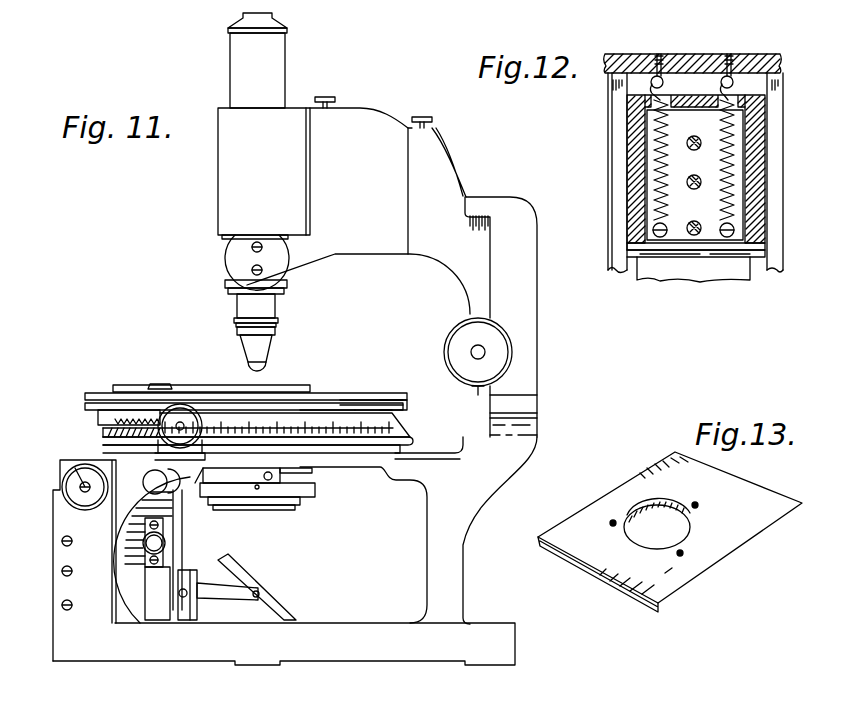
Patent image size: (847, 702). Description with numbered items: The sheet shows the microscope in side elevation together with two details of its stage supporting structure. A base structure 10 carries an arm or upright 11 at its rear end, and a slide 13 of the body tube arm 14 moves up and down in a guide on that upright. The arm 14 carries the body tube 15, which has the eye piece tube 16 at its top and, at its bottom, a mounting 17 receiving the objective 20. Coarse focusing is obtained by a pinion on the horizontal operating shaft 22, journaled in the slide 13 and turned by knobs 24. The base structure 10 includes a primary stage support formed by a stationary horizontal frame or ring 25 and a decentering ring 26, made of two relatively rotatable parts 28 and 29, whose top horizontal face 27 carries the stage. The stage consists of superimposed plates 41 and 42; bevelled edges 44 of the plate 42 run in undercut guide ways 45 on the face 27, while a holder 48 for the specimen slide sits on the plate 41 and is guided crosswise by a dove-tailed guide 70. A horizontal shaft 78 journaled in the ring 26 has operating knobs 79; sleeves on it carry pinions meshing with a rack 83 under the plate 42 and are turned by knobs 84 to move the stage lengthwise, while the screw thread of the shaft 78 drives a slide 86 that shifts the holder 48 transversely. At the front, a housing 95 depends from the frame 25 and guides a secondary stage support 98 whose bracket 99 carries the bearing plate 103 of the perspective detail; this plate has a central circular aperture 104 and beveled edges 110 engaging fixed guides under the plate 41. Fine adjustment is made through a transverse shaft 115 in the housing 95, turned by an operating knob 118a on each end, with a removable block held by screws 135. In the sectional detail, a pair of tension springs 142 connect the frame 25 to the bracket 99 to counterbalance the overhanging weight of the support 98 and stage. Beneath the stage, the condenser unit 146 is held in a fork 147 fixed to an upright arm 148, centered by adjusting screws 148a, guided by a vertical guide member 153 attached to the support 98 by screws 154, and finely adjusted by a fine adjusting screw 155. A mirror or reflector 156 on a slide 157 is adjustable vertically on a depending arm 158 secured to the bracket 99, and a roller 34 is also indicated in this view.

In FIG. 11, the base structure 10 is at (284, 626).
In FIG. 12, the base structure 10 is at (680, 173).
In FIG. 11, the arm or upright 11 is at (531, 320).
In FIG. 11, the slide of the body tube arm 13 is at (463, 292).
In FIG. 11, the body tube arm 14 is at (423, 272).
In FIG. 11, the body tube 15 is at (276, 168).
In FIG. 11, the eye piece tube 16 is at (278, 54).
In FIG. 11, the mounting 17 is at (276, 325).
In FIG. 11, the objective 20 is at (262, 370).
In FIG. 11, the operating shaft 22 is at (485, 351).
In FIG. 11, the knobs 24 is at (500, 371).
In FIG. 11, the horizontal frame or ring 25 is at (283, 452).
In FIG. 12, the horizontal frame or ring 25 is at (748, 56).
In FIG. 11, the decentering ring 26 is at (412, 421).
In FIG. 11, the top horizontal face 27 is at (370, 415).
In FIG. 11, the part of decentering ring 28 is at (256, 424).
In FIG. 11, the part of decentering ring 29 is at (412, 446).
In FIG. 11, the roller 34 is at (158, 470).
In FIG. 11, the stage plate 41 is at (379, 393).
In FIG. 11, the stage plate 42 is at (404, 398).
In FIG. 11, the bevelled edges 44 is at (365, 400).
In FIG. 11, the undercut guide ways 45 is at (320, 410).
In FIG. 11, the holder 48 is at (190, 384).
In FIG. 11, the dove-tailed guide 70 is at (152, 384).
In FIG. 11, the horizontal shaft 78 is at (182, 424).
In FIG. 11, the operating knobs 79 is at (202, 424).
In FIG. 11, the rack 83 is at (98, 417).
In FIG. 11, the operating knobs 84 is at (190, 448).
In FIG. 11, the slide 86 is at (105, 430).
In FIG. 11, the projection or housing 95 is at (66, 516).
In FIG. 12, the secondary stage support 98 is at (722, 283).
In FIG. 12, the bracket 99 is at (628, 153).
In FIG. 13, the bearing plate 103 is at (670, 527).
In FIG. 13, the central circular aperture 104 is at (638, 508).
In FIG. 13, the beveled edges 110 is at (658, 612).
In FIG. 11, the transverse shaft 115 is at (62, 471).
In FIG. 11, the operating knob 118a is at (98, 516).
In FIG. 11, the screws 135 is at (63, 603).
In FIG. 12, the tension springs 142 is at (722, 214).
In FIG. 11, the condenser unit 146 is at (290, 500).
In FIG. 11, the fork 147 is at (253, 476).
In FIG. 11, the upright arm 148 is at (165, 523).
In FIG. 11, the adjusting screws 148a is at (257, 489).
In FIG. 11, the vertical guide member 153 is at (135, 600).
In FIG. 12, the screws 154 is at (700, 170).
In FIG. 11, the fine adjusting screw 155 is at (168, 543).
In FIG. 11, the mirror or reflector 156 is at (280, 615).
In FIG. 11, the slide 157 is at (197, 611).
In FIG. 11, the depending arm 158 is at (213, 554).